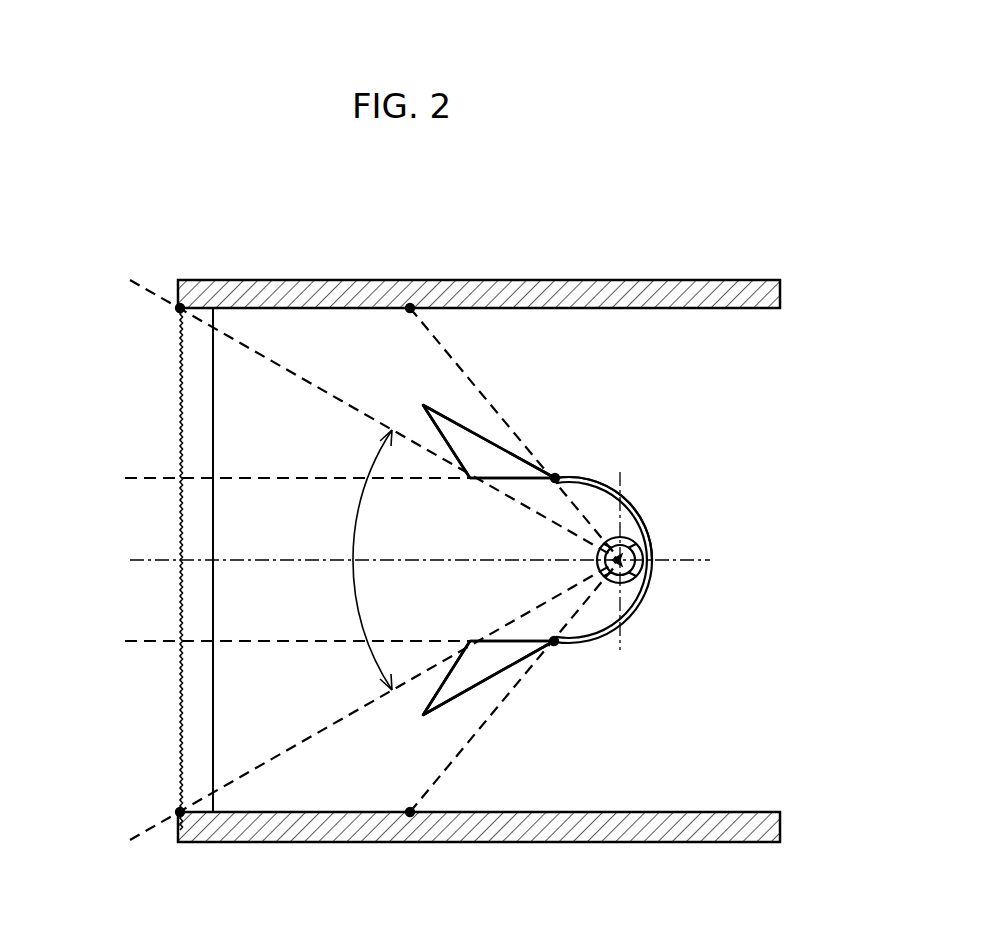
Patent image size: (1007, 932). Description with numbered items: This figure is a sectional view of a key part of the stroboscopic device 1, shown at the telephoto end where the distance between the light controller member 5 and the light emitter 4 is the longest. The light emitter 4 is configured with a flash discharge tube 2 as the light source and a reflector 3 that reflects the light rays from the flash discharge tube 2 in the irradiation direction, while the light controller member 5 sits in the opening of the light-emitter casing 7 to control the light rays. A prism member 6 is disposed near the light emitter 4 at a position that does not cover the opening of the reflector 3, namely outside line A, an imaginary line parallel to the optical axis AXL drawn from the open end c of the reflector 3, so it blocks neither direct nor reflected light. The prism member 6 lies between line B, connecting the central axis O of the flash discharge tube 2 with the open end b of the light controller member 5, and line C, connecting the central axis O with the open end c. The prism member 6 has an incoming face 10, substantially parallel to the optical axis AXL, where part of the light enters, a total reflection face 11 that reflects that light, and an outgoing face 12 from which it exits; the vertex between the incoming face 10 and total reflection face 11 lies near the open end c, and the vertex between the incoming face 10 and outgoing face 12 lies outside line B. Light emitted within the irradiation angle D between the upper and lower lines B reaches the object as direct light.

The stroboscopic device 1 is at (62, 210).
The flash discharge tube 2 is at (647, 583).
The reflector 3 is at (634, 610).
The light emitter 4 is at (640, 495).
The light controller member 5 is at (190, 716).
The prism member 6 is at (472, 447).
The light-emitter casing 7 is at (236, 290).
The incoming face 10 is at (507, 643).
The total reflection face 11 is at (515, 450).
The outgoing face 12 is at (432, 426).
The line A is at (285, 478).
The line B is at (320, 385).
The line C is at (452, 352).
The irradiation angle D is at (353, 547).
The central axis O is at (624, 559).
The open end of light controller member b is at (178, 308).
The open end of reflector c is at (557, 476).
The optical axis AXL is at (390, 560).